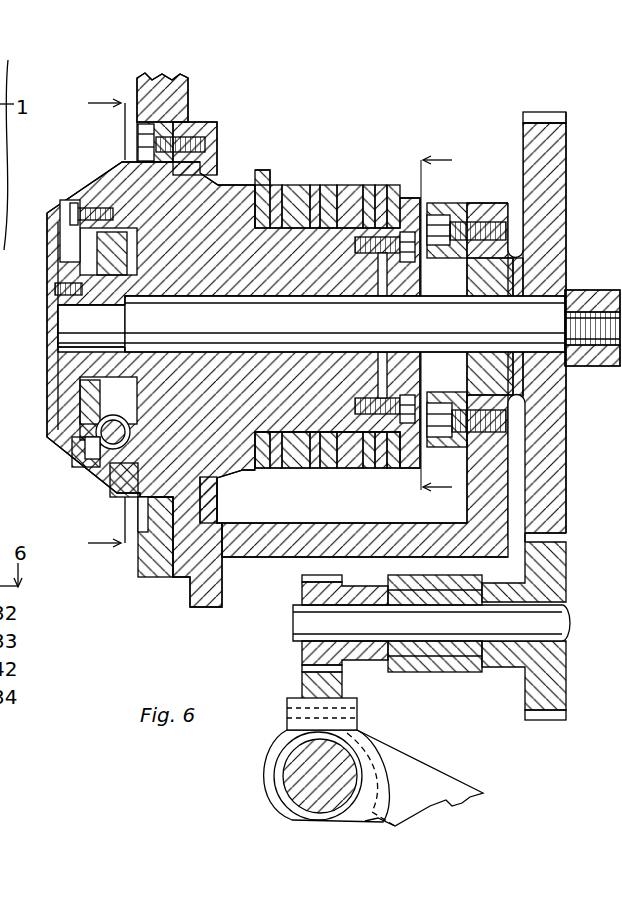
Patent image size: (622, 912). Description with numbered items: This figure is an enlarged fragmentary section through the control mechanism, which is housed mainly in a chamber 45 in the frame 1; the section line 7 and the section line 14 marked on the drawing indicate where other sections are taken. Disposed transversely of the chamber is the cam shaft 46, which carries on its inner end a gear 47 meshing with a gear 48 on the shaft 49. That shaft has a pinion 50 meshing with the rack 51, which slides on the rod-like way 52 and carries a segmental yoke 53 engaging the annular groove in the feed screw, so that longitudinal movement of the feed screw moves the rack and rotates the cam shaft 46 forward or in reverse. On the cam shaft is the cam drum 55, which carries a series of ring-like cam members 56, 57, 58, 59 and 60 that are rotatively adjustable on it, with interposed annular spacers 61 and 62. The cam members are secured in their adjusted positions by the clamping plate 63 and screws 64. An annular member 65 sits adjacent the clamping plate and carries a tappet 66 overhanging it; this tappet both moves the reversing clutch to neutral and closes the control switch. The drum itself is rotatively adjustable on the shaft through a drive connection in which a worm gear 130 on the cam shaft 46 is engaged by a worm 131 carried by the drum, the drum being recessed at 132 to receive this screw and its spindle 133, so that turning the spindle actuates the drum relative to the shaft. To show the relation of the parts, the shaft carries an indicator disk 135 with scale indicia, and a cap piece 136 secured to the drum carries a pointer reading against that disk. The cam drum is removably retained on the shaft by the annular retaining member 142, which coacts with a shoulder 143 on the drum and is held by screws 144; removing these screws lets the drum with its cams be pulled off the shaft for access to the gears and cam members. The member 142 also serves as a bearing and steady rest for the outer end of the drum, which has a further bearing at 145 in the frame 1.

The frame 1 is at (196, 590).
The section line 7- 7 is at (97, 325).
The section line 14- 14 is at (442, 319).
The chamber 45 is at (468, 510).
The cam shaft 46 is at (458, 325).
The gear 47 is at (548, 430).
The gear 48 is at (552, 575).
The shaft 49 is at (553, 625).
The pinion 50 is at (310, 590).
The rack 51 is at (312, 683).
The rod-like way 52 is at (340, 752).
The segmental yoke 53 is at (423, 780).
The cam drum 55 is at (232, 200).
The cam member 56 is at (372, 200).
The cam member 57 is at (330, 200).
The cam member 58 is at (314, 200).
The cam member 59 is at (278, 468).
The cam member 60 is at (270, 176).
The annular spacer 61 is at (348, 200).
The annular spacer 62 is at (292, 200).
The clamping plate 63 is at (397, 460).
The screws 64 is at (410, 227).
The annular member 65 is at (400, 200).
The tappet 66 is at (407, 215).
The worm gear 130 is at (108, 403).
The worm 131 is at (103, 462).
The recess 132 is at (112, 498).
The spindle 133 is at (100, 443).
The indicator disk 135 is at (56, 216).
The cap piece 136 is at (98, 187).
The annular retaining member 142 is at (133, 168).
The shoulder 143 is at (186, 132).
The screws 144 is at (153, 137).
The bearing 145 is at (210, 498).